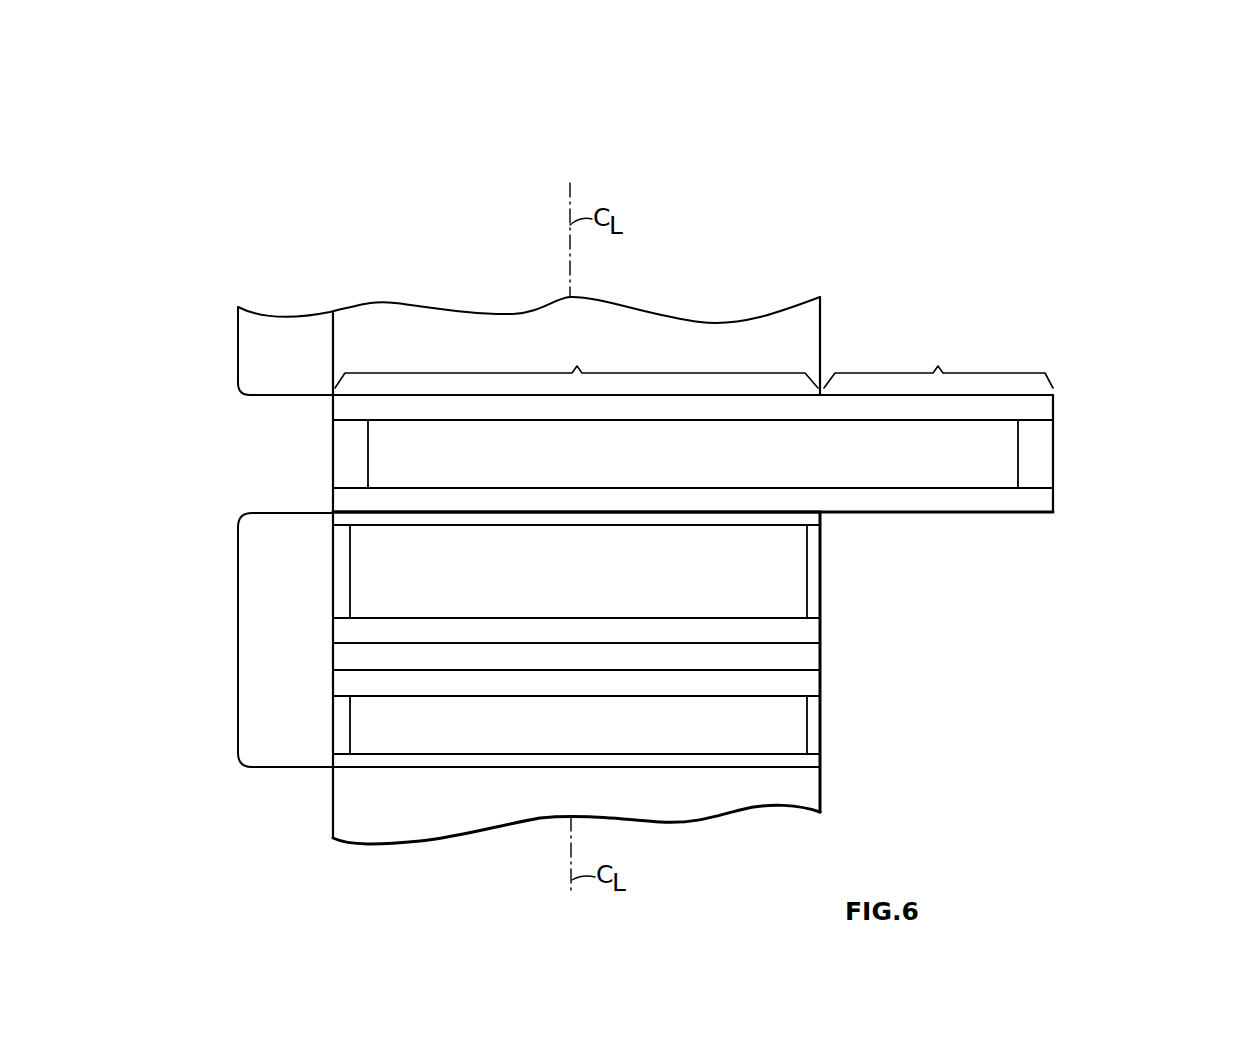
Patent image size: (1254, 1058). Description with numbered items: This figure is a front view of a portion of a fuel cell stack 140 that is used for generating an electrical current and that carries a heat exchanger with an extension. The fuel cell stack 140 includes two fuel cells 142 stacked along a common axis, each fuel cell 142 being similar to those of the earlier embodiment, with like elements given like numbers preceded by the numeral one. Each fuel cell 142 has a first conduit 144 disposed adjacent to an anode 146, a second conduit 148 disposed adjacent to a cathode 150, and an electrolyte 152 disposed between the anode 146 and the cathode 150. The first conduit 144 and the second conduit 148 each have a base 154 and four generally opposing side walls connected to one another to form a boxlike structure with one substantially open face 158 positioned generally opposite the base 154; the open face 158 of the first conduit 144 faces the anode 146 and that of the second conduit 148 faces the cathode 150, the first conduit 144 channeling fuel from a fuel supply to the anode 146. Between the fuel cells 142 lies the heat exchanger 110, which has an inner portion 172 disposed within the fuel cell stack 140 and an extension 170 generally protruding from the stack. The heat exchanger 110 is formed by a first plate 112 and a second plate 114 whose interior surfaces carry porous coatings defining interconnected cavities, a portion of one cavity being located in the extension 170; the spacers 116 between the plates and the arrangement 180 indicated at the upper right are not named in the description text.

The heat exchanger 110 is at (324, 461).
The first plate 112 is at (1040, 404).
The second plate 114 is at (1040, 496).
The rail spacer 116 is at (352, 443).
The fuel cell stack 140 is at (1025, 153).
The fuel cell 142 is at (236, 352).
The first conduit 144 is at (420, 545).
The anode 146 is at (808, 628).
The second conduit 148 is at (430, 720).
The cathode 150 is at (808, 680).
The electrolyte 152 is at (808, 655).
The base 154 is at (810, 518).
The substantially open face 158 is at (601, 604).
The extension 170 is at (938, 363).
The inner portion 172 is at (576, 363).
The linear motor 180 is at (1135, 298).